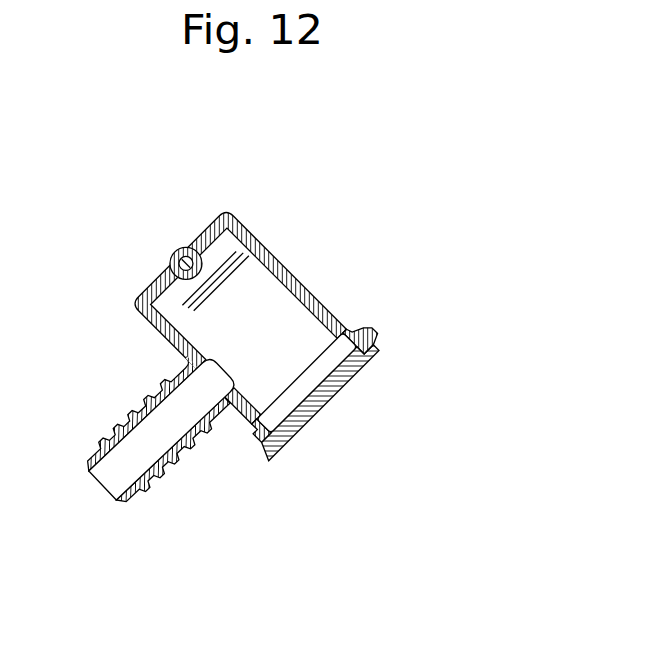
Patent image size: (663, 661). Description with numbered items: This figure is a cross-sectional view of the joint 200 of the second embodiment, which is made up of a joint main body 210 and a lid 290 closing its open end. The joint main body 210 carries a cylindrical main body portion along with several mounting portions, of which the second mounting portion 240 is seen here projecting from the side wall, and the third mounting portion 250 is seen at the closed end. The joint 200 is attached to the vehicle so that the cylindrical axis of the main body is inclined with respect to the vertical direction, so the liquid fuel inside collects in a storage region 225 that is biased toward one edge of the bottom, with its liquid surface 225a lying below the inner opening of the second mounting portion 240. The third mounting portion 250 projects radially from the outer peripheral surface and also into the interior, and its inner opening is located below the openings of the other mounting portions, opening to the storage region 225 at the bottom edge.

The joint 200 is at (295, 267).
The joint main body 210 is at (262, 261).
The storage region 225 is at (277, 249).
The liquid surface 225a is at (238, 272).
The second mounting portion 240 is at (122, 420).
The third mounting portion 250 is at (185, 249).
The lid 290 is at (355, 377).